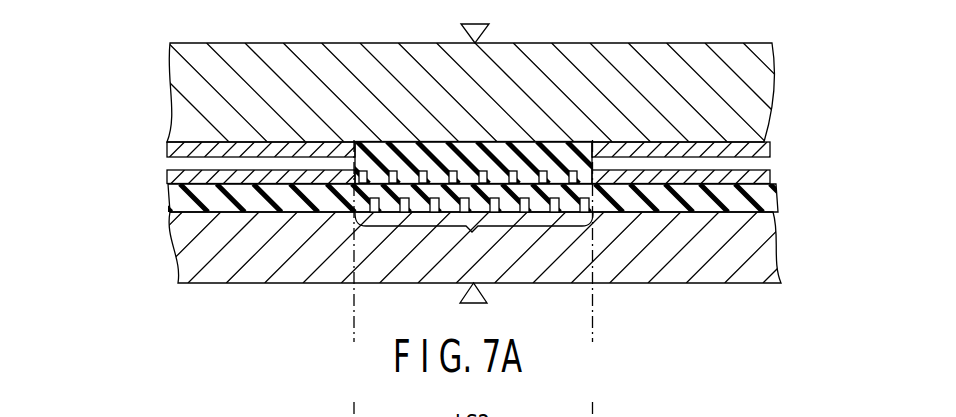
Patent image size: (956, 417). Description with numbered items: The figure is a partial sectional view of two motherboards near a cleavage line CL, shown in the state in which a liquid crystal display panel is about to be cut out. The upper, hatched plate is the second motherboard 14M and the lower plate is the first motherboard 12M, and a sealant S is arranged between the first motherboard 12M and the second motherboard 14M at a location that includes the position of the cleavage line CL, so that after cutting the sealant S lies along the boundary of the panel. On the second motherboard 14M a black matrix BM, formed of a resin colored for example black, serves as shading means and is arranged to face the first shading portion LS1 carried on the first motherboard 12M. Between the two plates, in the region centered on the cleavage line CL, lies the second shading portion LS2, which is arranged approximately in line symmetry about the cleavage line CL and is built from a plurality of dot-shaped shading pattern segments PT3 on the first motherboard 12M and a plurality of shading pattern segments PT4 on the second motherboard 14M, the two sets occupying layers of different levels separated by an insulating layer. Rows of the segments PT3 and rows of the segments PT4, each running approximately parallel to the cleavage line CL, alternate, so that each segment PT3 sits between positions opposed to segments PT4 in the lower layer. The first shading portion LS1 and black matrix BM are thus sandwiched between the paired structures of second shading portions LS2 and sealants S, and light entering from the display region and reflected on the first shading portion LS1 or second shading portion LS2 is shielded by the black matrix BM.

The second motherboard 14M is at (156, 87).
The first motherboard 12M is at (156, 225).
The black matrix BM is at (252, 150).
The cleavage line CL is at (474, 151).
The sealant S is at (516, 148).
The shading pattern segment PT4 is at (388, 186).
The shading pattern segment PT3 is at (390, 183).
The first shading portion LS1 is at (250, 200).
The second shading portion LS2 is at (474, 239).